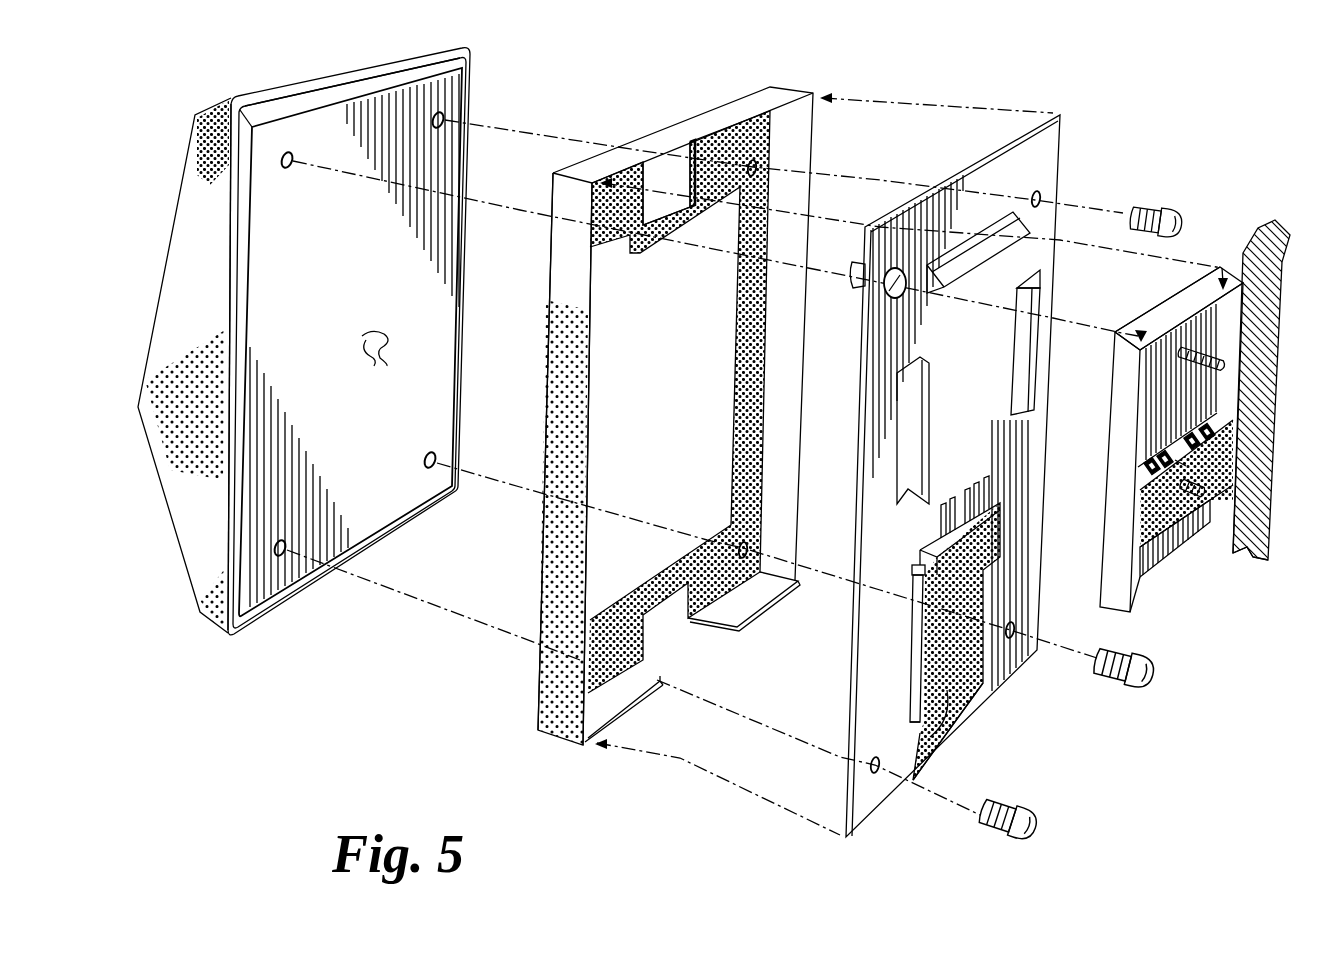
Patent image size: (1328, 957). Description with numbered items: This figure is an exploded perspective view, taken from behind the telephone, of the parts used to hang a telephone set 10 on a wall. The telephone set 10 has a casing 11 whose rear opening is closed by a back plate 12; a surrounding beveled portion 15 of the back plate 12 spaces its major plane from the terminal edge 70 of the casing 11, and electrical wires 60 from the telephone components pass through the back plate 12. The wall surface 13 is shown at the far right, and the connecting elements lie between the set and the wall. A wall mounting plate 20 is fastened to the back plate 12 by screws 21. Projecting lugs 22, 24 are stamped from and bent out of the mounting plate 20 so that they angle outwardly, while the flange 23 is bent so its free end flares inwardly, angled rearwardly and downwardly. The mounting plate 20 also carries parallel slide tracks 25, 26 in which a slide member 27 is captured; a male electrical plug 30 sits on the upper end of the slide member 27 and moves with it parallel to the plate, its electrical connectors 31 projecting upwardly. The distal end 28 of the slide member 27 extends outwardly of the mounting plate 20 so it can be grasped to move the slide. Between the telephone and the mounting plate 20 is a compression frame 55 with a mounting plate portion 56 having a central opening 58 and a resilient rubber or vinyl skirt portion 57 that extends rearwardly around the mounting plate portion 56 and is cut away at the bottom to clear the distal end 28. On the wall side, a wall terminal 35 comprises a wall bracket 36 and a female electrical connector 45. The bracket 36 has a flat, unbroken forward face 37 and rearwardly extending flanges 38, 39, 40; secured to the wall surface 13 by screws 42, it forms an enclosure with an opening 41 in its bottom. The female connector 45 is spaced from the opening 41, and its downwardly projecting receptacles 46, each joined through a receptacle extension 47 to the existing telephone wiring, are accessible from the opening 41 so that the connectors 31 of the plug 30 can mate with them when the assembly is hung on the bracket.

The telephone set 10 is at (158, 154).
The casing 11 is at (188, 270).
The back plate 12 is at (349, 341).
The wall surface 13 is at (1253, 556).
The beveled portion 15 is at (300, 108).
The wall mounting plate 20 is at (1063, 135).
The screws 21 is at (857, 288).
The projecting lug 22 is at (930, 367).
The flange 23 is at (984, 262).
The projecting lug 24 is at (1023, 352).
The slide track 25 is at (915, 667).
The slide track 26 is at (1003, 672).
The slide member 27 is at (917, 735).
The distal end 28 is at (948, 762).
The electrical plug 30 is at (941, 625).
The electrical connectors 31 is at (967, 497).
The wall terminal 35 is at (1192, 409).
The wall bracket 36 is at (1182, 296).
The forward face 37 is at (1138, 320).
The flange 38 is at (1118, 463).
The flange 39 is at (1163, 320).
The flange 40 is at (1232, 328).
The opening 41 is at (1178, 567).
The screws 42 is at (1233, 364).
The female electrical connector 45 is at (1217, 463).
The receptacles 46 is at (1197, 533).
The receptacle extension 47 is at (1191, 467).
The compression frame 55 is at (697, 397).
The mounting plate portion 56 is at (727, 187).
The skirt portion 57 is at (805, 128).
The central opening 58 is at (733, 368).
The electrical wires 60 is at (387, 364).
The terminal edge 70 is at (223, 492).